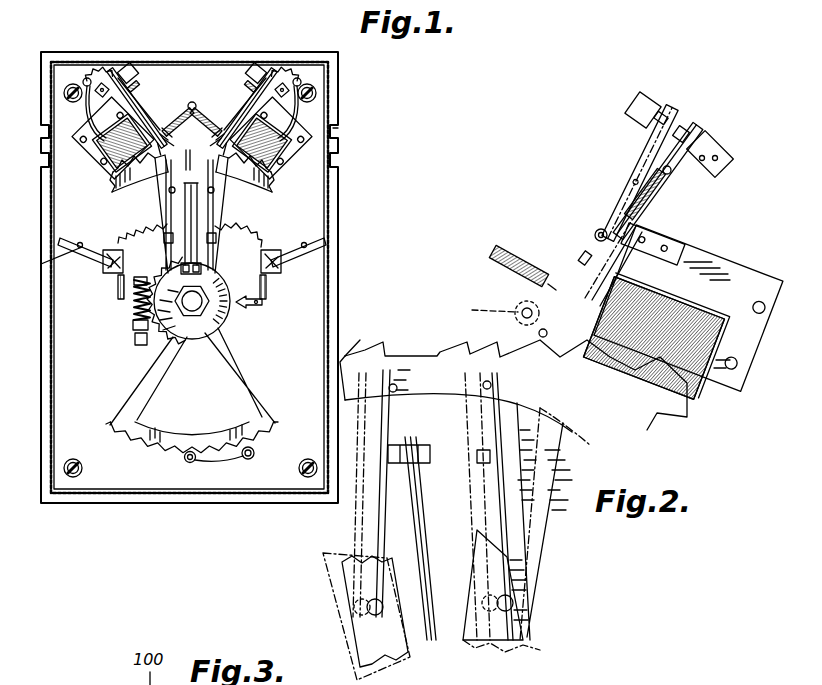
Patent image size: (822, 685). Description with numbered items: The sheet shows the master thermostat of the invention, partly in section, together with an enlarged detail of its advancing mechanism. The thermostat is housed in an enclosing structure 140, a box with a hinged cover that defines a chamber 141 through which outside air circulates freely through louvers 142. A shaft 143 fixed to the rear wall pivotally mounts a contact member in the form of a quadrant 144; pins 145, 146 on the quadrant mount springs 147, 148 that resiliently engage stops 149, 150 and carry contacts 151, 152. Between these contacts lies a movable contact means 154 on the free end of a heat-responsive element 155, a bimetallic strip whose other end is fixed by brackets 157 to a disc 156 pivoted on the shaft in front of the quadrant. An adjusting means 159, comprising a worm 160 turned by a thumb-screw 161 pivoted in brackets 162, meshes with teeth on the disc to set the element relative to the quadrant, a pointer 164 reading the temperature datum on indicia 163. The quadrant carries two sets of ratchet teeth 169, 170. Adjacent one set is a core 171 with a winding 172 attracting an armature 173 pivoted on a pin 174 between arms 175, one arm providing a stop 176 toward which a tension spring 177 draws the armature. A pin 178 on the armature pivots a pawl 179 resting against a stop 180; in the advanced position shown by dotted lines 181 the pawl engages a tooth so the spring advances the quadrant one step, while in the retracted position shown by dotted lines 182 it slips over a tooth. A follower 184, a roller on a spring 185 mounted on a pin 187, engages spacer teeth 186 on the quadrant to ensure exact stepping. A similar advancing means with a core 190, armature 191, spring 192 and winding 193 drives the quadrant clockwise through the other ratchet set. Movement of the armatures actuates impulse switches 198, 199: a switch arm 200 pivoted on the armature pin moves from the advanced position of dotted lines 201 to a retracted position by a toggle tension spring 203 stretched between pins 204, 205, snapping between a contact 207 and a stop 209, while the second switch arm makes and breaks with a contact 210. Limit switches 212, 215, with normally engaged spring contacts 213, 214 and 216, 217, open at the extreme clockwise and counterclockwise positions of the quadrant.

In FIG. 1, the enclosing structure 140 is at (333, 188).
In FIG. 1, the chamber 141 is at (312, 217).
In FIG. 1, the louvers 142 is at (337, 129).
In FIG. 1, the shaft 143 is at (195, 312).
In FIG. 1, the quadrant 144 is at (238, 358).
In FIG. 1, the pin 145 is at (216, 243).
In FIG. 1, the pin 146 is at (166, 243).
In FIG. 1, the spring 147 is at (214, 222).
In FIG. 1, the spring 148 is at (166, 221).
In FIG. 1, the stop 149 is at (215, 188).
In FIG. 2, the stop 149 is at (484, 382).
In FIG. 1, the stop 150 is at (168, 190).
In FIG. 2, the stop 150 is at (397, 388).
In FIG. 1, the contact 151 is at (236, 206).
In FIG. 2, the contact 151 is at (478, 463).
In FIG. 1, the contact 152 is at (158, 203).
In FIG. 2, the contact 152 is at (418, 490).
In FIG. 1, the movable contact means 154 is at (193, 207).
In FIG. 2, the movable contact means 154 is at (425, 448).
In FIG. 1, the heat-responsive element 155 is at (140, 233).
In FIG. 1, the disc 156 is at (186, 345).
In FIG. 1, the brackets 157 is at (179, 279).
In FIG. 1, the adjusting means 159 is at (128, 308).
In FIG. 1, the worm 160 is at (131, 318).
In FIG. 1, the thumb-screw 161 is at (140, 346).
In FIG. 1, the brackets 162 is at (132, 280).
In FIG. 1, the indicia 163 is at (232, 316).
In FIG. 1, the pointer 164 is at (264, 302).
In FIG. 1, the ratchet teeth 169 is at (139, 172).
In FIG. 2, the ratchet teeth 169 is at (372, 340).
In FIG. 1, the ratchet teeth 170 is at (245, 172).
In FIG. 2, the ratchet teeth 170 is at (620, 432).
In FIG. 1, the core 171 is at (288, 160).
In FIG. 2, the core 171 is at (740, 390).
In FIG. 1, the winding 172 is at (270, 165).
In FIG. 2, the winding 172 is at (688, 402).
In FIG. 1, the armature 173 is at (219, 128).
In FIG. 2, the armature 173 is at (580, 307).
In FIG. 2, the pin 174 is at (596, 230).
In FIG. 2, the arms 175 is at (598, 226).
In FIG. 2, the stop 176 is at (580, 256).
In FIG. 1, the tension spring 177 is at (207, 124).
In FIG. 2, the tension spring 177 is at (490, 262).
In FIG. 2, the pin 178 is at (538, 332).
In FIG. 2, the pawl 179 is at (513, 392).
In FIG. 2, the stop 180 is at (521, 310).
In FIG. 2, the dotted lines 181 is at (472, 310).
In FIG. 2, the dotted lines 182 is at (598, 357).
In FIG. 1, the follower 184 is at (186, 462).
In FIG. 1, the spring 185 is at (220, 462).
In FIG. 1, the spacer teeth 186 is at (147, 447).
In FIG. 1, the pin 187 is at (255, 453).
In FIG. 1, the core 190 is at (100, 160).
In FIG. 1, the armature 191 is at (165, 128).
In FIG. 1, the spring 192 is at (191, 102).
In FIG. 1, the winding 193 is at (112, 172).
In FIG. 1, the impulse switch 198 is at (273, 72).
In FIG. 2, the impulse switch 198 is at (689, 118).
In FIG. 1, the impulse switch 199 is at (105, 72).
In FIG. 2, the switch arm 200 is at (671, 173).
In FIG. 2, the dotted lines 201 is at (640, 142).
In FIG. 2, the tension spring 203 is at (657, 198).
In FIG. 2, the pin 204 is at (580, 285).
In FIG. 1, the pin 205 is at (297, 86).
In FIG. 2, the pin 205 is at (673, 174).
In FIG. 1, the contact 207 is at (259, 67).
In FIG. 2, the contact 207 is at (658, 100).
In FIG. 1, the stop 209 is at (102, 95).
In FIG. 2, the stop 209 is at (705, 142).
In FIG. 1, the contact 210 is at (133, 70).
In FIG. 1, the limit switch 212 is at (280, 262).
In FIG. 1, the spring contact 213 is at (300, 250).
In FIG. 1, the spring contact 214 is at (259, 234).
In FIG. 1, the limit switch 215 is at (93, 260).
In FIG. 1, the spring contact 216 is at (41, 264).
In FIG. 1, the spring contact 217 is at (95, 250).